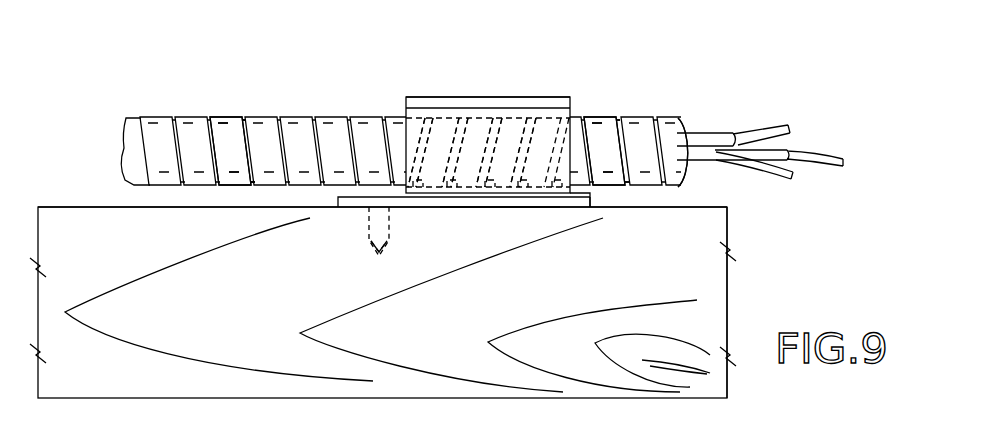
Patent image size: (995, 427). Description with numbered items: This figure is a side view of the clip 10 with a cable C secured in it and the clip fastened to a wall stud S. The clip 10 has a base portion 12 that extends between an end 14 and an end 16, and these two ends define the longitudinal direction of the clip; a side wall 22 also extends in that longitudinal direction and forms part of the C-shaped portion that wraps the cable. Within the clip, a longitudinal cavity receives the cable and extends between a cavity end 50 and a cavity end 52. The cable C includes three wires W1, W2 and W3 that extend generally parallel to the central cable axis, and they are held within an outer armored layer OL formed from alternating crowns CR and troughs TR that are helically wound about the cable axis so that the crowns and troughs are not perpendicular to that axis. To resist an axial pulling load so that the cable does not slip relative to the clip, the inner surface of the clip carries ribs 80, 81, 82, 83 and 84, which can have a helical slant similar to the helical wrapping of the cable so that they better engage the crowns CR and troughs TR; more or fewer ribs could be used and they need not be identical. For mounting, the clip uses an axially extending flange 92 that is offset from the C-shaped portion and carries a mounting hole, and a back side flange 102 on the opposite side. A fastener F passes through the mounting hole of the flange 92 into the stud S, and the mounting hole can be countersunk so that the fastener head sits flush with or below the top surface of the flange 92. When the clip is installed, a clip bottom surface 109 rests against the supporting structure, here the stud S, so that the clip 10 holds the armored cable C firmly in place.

The clip 10 is at (546, 84).
The base portion 12 is at (460, 210).
The end 14 is at (335, 199).
The end 16 is at (597, 203).
The side wall 22 is at (561, 136).
The cavity end 50 is at (405, 115).
The cavity end 52 is at (610, 187).
The rib 80 is at (397, 112).
The rib 81 is at (442, 120).
The rib 82 is at (477, 120).
The rib 83 is at (518, 120).
The rib 84 is at (548, 117).
The flange 92 is at (354, 198).
The back side flange 102 is at (579, 197).
The clip bottom surface 109 is at (495, 208).
The outer armored layer OL is at (149, 118).
The crown CR is at (213, 119).
The trough TR is at (243, 118).
The cable C is at (668, 113).
The wire W1 is at (790, 143).
The wire W2 is at (721, 130).
The wire W3 is at (720, 156).
The fastener F is at (367, 247).
The stud S is at (729, 300).